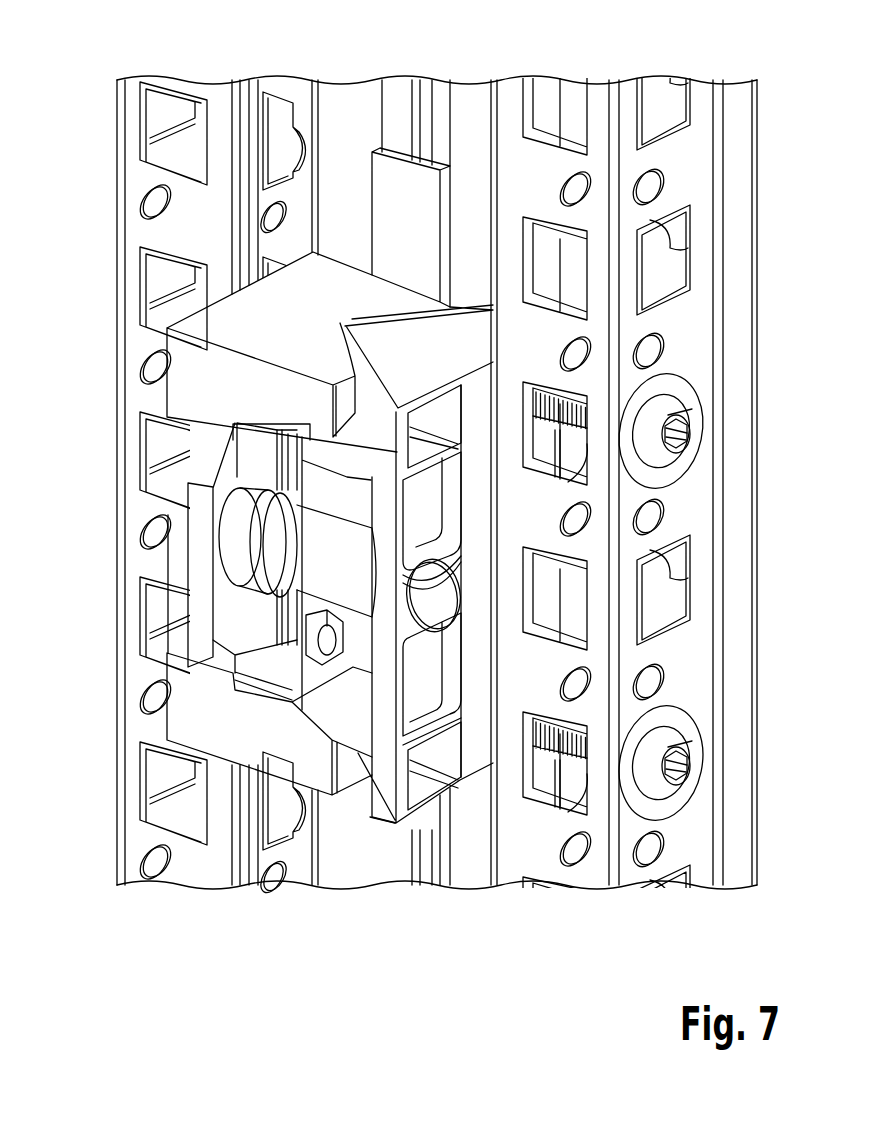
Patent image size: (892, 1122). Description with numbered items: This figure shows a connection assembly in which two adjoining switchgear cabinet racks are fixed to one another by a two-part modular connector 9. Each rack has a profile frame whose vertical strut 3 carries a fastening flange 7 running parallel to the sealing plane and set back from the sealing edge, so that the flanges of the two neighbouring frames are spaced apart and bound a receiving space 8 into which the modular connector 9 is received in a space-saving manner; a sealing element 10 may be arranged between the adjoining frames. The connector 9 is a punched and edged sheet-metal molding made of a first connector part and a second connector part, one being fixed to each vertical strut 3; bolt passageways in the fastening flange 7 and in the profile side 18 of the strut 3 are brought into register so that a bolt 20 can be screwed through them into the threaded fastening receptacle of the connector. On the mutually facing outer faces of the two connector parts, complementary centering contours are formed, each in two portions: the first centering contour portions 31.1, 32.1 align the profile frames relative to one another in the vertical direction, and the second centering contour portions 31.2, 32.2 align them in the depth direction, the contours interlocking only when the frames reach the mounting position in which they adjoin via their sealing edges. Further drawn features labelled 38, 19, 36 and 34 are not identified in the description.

The vertical strut 3 is at (438, 494).
The fastening flange 7 is at (263, 92).
The receiving space 8 is at (352, 108).
The sealing element 10 is at (403, 180).
The rear flange edge 38 is at (452, 306).
The profile side 18 is at (683, 323).
The perforation opening 19 is at (668, 605).
The bolt 20 is at (678, 410).
The bracket 36 is at (177, 533).
The bolt cylinder 34 is at (247, 577).
The modular connector 9 is at (343, 803).
The first centering contour portion 31.1 is at (281, 740).
The first centering contour portion 32.1 is at (268, 737).
The second centering contour portion 31.2 is at (330, 352).
The second centering contour portion 32.2 is at (340, 324).